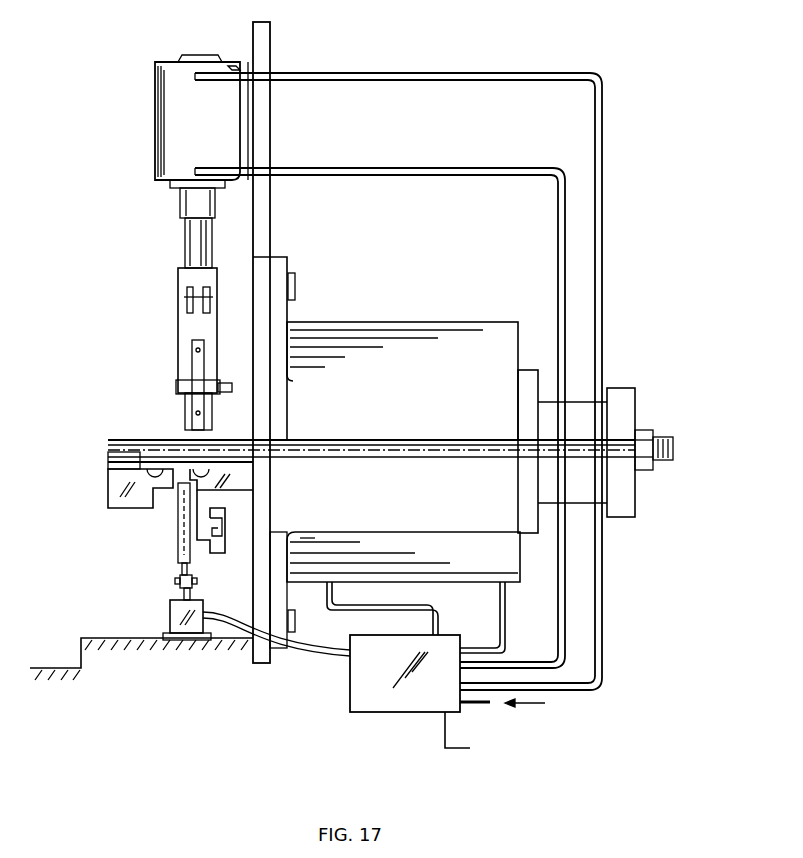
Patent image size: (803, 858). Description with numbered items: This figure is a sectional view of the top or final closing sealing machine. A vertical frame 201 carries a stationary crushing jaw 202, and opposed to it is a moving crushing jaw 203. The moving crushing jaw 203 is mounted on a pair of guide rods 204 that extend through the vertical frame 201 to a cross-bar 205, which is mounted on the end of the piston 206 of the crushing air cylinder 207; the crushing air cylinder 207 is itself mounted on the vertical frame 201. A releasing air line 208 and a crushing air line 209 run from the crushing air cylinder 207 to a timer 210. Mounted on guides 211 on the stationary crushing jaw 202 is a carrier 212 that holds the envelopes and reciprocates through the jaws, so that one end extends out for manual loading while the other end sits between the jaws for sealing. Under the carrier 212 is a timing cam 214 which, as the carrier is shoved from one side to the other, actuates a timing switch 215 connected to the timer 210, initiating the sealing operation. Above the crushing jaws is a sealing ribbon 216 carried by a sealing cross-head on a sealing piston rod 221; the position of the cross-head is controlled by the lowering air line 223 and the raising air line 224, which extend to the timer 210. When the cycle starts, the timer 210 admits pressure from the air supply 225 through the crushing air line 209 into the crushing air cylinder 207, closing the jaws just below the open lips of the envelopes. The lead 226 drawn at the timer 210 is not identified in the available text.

The vertical frame 201 is at (272, 115).
The stationary crushing jaw 202 is at (222, 512).
The moving crushing jaw 203 is at (108, 500).
The guide rods 204 is at (137, 440).
The cross-bar 205 is at (637, 413).
The piston 206 is at (603, 400).
The crushing air cylinder 207 is at (415, 322).
The releasing air line 208 is at (503, 620).
The crushing air line 209 is at (367, 612).
The timer 210 is at (350, 693).
The guides 211 is at (225, 530).
The carrier 212 is at (178, 522).
The timing cam 214 is at (180, 568).
The timing switch 215 is at (170, 612).
The sealing ribbon 216 is at (200, 437).
The sealing piston rod 221 is at (185, 243).
The lowering air line 223 is at (467, 73).
The raising air line 224 is at (452, 168).
The air supply 225 is at (478, 705).
The power line 226 is at (445, 738).